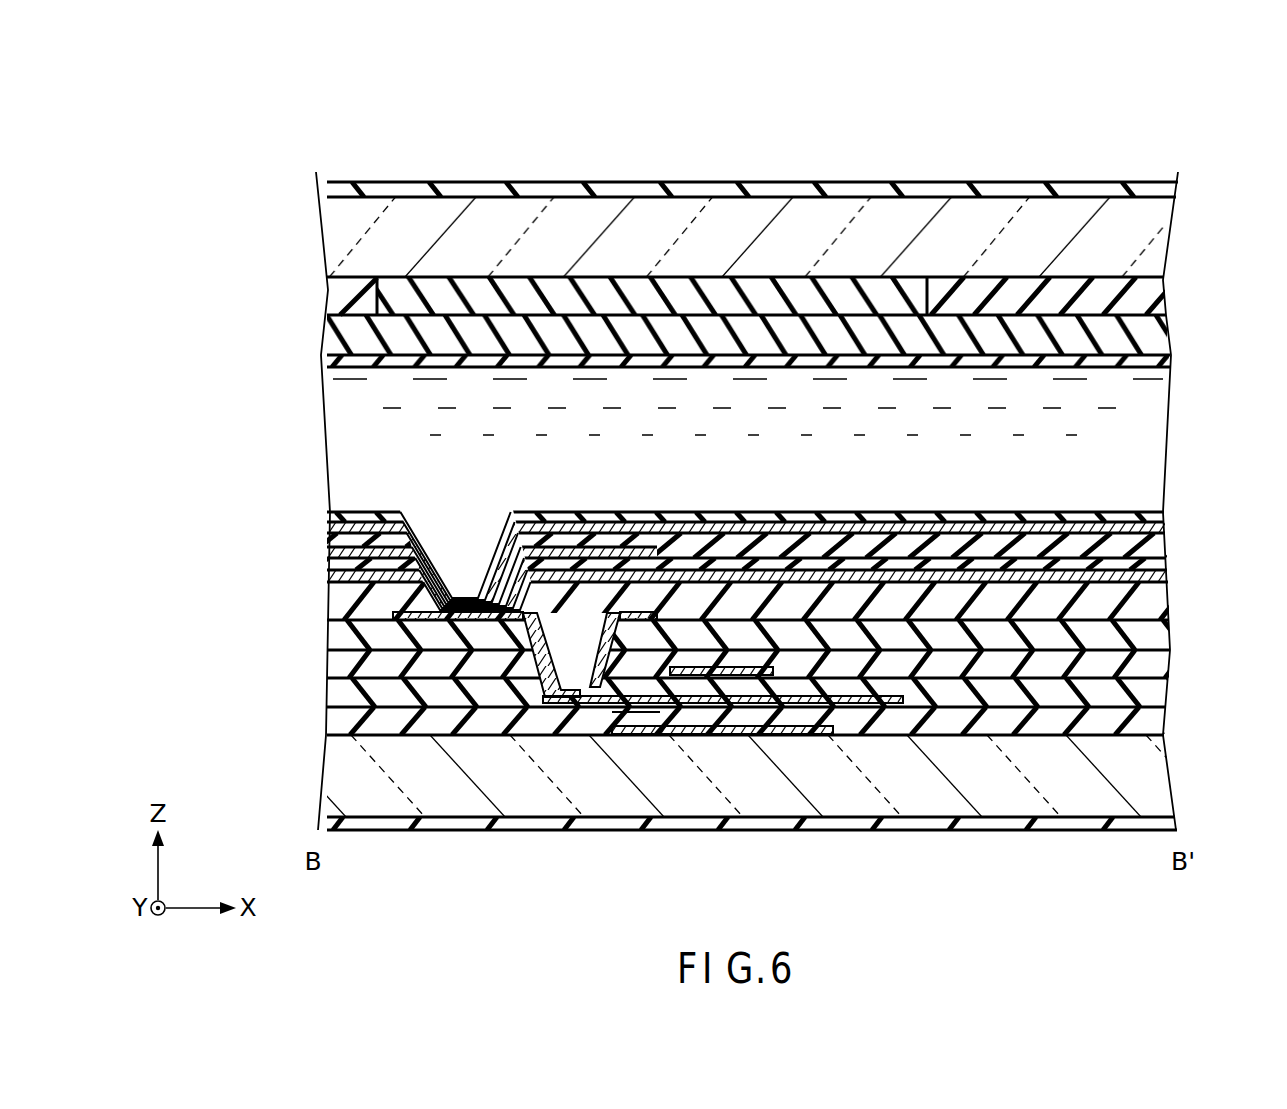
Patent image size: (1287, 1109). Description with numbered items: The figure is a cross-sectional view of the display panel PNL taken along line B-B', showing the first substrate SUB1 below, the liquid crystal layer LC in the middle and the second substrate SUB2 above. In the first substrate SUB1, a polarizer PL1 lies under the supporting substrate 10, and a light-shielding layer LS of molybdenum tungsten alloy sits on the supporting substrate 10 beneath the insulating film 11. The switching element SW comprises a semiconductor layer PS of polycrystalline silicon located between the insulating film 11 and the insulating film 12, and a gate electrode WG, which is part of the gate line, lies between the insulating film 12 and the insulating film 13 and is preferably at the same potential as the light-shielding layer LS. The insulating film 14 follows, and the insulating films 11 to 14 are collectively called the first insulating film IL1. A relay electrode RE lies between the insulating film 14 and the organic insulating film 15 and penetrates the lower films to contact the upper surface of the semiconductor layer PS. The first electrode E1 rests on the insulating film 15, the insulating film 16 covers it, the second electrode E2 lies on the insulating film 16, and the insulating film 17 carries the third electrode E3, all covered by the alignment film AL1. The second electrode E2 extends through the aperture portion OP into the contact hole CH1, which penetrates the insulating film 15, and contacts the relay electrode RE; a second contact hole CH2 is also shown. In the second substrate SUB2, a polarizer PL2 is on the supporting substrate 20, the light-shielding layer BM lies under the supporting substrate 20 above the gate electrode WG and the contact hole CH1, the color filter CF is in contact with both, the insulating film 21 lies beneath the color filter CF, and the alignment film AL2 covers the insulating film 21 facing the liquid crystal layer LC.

The display panel PNL is at (1147, 148).
The second substrate SUB2 is at (313, 262).
The polarizer PL2 is at (410, 192).
The supporting substrate 20 is at (490, 212).
The light-shielding layer BM is at (862, 290).
The color filter CF is at (352, 298).
The insulating film 21 is at (718, 335).
The alignment film AL2 is at (1168, 361).
The liquid crystal layer LC is at (347, 427).
The first substrate SUB1 is at (313, 755).
The alignment film AL1 is at (1163, 516).
The third electrode E3 is at (682, 528).
The second electrode E2 is at (632, 552).
The first electrode E1 is at (372, 577).
The insulating film 17 is at (1090, 550).
The insulating film 16 is at (1040, 590).
The insulating film 15 is at (985, 605).
The insulating film 14 is at (940, 640).
The insulating film 13 is at (885, 665).
The insulating film 12 is at (520, 700).
The insulating film 11 is at (480, 725).
The supporting substrate 10 is at (435, 800).
The first insulating film IL1 is at (1198, 653).
The polarizer PL1 is at (372, 822).
The contact hole CH1 is at (469, 585).
The second contact hole CH2 is at (579, 645).
The aperture portion OP is at (401, 556).
The relay electrode RE is at (553, 662).
The switching element SW is at (651, 724).
The gate electrode WG is at (700, 674).
The semiconductor layer PS is at (745, 701).
The light-shielding layer LS is at (792, 733).